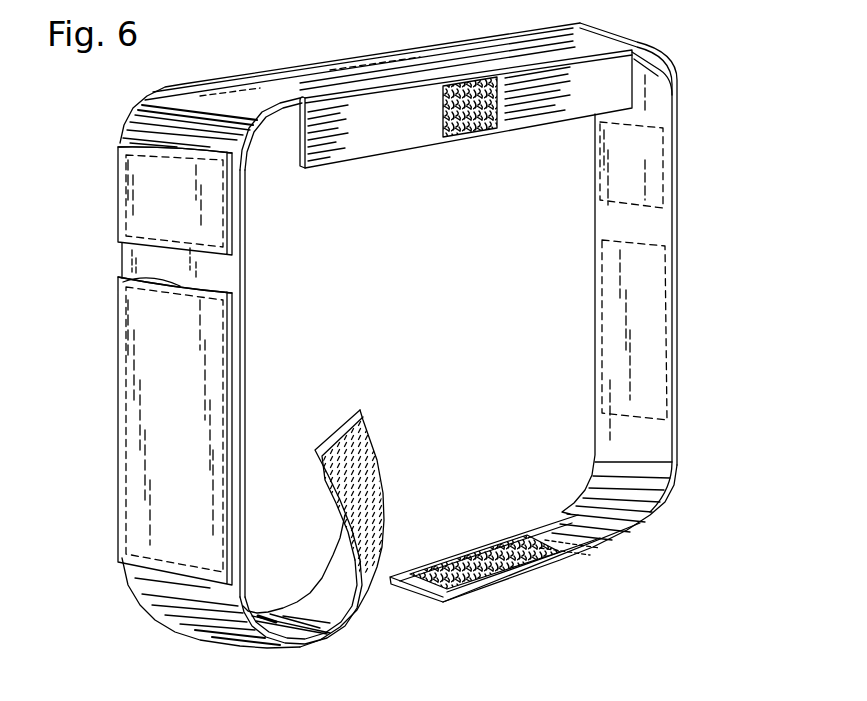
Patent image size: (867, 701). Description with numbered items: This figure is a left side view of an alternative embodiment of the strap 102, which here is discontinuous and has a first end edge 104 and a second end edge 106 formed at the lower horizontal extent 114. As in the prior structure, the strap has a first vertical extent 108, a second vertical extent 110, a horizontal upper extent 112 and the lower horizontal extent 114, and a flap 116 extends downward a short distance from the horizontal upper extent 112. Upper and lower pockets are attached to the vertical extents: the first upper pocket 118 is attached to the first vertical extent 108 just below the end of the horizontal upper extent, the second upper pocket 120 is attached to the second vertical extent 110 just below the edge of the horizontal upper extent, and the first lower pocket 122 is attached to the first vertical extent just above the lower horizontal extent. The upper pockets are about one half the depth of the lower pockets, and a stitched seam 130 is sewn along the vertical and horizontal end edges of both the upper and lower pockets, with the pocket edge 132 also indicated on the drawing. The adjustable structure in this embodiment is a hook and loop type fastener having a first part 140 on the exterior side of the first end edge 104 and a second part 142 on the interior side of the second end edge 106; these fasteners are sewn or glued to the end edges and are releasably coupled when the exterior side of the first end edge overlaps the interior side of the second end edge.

The strap 102 is at (288, 62).
The first end edge 104 is at (350, 413).
The second end edge 106 is at (393, 577).
The first vertical extent 108 is at (143, 274).
The second vertical extent 110 is at (672, 156).
The horizontal upper extent 112 is at (345, 66).
The lower horizontal extent 114 is at (607, 540).
The flap 116 is at (413, 137).
The first upper pocket 118 is at (218, 235).
The second upper pocket 120 is at (650, 191).
The first lower pocket 122 is at (648, 325).
The stitched seam 130 is at (123, 182).
The pad top edge 132 is at (168, 148).
The first part 140 is at (372, 450).
The second part 142 is at (462, 556).